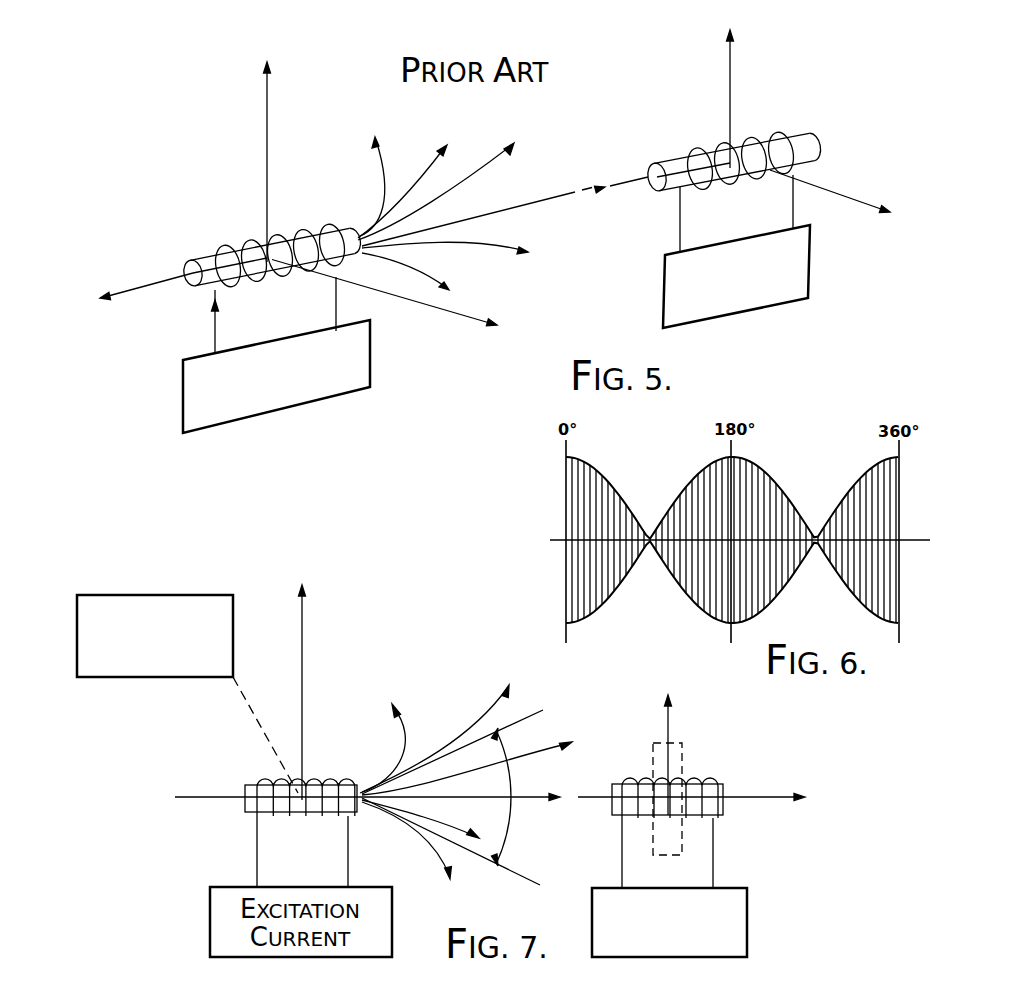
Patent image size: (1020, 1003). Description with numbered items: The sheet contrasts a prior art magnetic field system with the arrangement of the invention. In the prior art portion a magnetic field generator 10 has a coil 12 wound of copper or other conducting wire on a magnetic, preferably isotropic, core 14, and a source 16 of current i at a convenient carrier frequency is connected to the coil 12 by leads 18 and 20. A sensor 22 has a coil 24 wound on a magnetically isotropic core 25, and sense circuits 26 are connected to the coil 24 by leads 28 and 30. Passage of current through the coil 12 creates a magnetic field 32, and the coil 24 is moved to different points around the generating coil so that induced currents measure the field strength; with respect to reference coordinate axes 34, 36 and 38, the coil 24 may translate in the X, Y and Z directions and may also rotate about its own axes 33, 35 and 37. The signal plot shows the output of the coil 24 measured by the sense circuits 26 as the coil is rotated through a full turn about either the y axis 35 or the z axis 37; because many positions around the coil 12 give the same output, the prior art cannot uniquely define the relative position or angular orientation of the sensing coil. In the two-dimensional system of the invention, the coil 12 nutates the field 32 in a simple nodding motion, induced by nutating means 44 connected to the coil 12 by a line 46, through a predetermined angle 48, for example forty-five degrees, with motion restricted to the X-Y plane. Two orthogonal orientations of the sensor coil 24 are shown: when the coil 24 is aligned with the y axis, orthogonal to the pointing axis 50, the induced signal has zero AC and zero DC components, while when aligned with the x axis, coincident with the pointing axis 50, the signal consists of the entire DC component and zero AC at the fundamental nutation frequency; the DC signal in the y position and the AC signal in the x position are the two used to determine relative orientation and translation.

In FIG. 5, the magnetic field generator 10 is at (255, 237).
In FIG. 5, the coil 12 is at (285, 229).
In FIG. 7, the coil 12 is at (258, 785).
In FIG. 5, the core 14 is at (343, 232).
In FIG. 5, the source of current 16 is at (372, 377).
In FIG. 5, the lead 18 is at (216, 346).
In FIG. 5, the lead 20 is at (336, 316).
In FIG. 5, the sensor 22 is at (746, 126).
In FIG. 5, the coil 24 is at (716, 138).
In FIG. 7, the coil 24 is at (708, 782).
In FIG. 5, the core 25 is at (803, 140).
In FIG. 5, the sense circuits 26 is at (810, 270).
In FIG. 7, the sense circuits 26 is at (748, 924).
In FIG. 5, the lead 28 is at (680, 230).
In FIG. 5, the lead 30 is at (793, 218).
In FIG. 5, the magnetic field 32 is at (480, 178).
In FIG. 7, the magnetic field 32 is at (500, 698).
In FIG. 5, the x axis 33 is at (637, 188).
In FIG. 7, the x axis 33 is at (758, 796).
In FIG. 5, the X axis 34 is at (160, 292).
In FIG. 7, the X axis 34 is at (530, 795).
In FIG. 5, the y axis 35 is at (848, 193).
In FIG. 7, the y axis 35 is at (666, 718).
In FIG. 5, the Y axis 36 is at (443, 312).
In FIG. 7, the Y axis 36 is at (302, 655).
In FIG. 5, the z axis 37 is at (730, 82).
In FIG. 5, the Z axis 38 is at (267, 118).
In FIG. 7, the nutating means 44 is at (195, 678).
In FIG. 7, the line 46 is at (250, 712).
In FIG. 7, the predetermined angle 48 is at (512, 826).
In FIG. 7, the pointing axis 50 is at (500, 800).